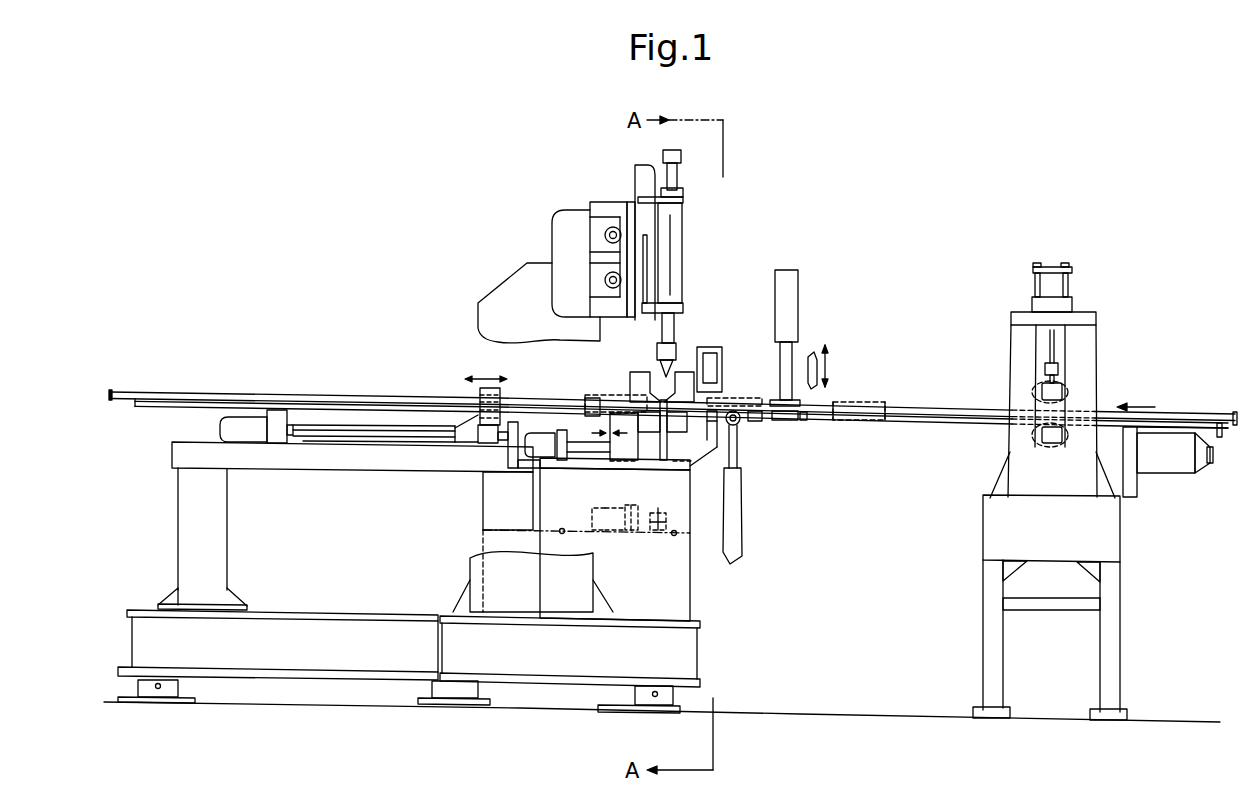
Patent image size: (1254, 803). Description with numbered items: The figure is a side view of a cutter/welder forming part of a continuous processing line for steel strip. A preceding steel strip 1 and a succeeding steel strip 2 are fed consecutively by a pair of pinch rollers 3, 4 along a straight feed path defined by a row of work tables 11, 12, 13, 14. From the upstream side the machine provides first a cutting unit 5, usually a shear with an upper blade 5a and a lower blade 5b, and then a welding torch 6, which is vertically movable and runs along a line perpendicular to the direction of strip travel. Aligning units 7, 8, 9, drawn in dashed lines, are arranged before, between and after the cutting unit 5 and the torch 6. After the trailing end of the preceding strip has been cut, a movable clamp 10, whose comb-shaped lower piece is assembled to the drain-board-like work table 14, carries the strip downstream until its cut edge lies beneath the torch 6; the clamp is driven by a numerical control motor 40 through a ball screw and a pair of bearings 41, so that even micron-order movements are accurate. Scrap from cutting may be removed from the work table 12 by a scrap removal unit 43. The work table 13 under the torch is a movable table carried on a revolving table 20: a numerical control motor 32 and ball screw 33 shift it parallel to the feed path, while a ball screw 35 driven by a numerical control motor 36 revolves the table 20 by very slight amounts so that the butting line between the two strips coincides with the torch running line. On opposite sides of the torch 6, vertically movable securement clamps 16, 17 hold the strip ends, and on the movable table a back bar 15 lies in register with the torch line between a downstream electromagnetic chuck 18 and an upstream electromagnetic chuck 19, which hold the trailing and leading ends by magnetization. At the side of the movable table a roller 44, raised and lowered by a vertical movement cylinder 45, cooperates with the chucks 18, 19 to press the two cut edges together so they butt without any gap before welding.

The preceding steel strip 1 is at (203, 394).
The succeeding steel strip 2 is at (1170, 415).
The pinch roller 3 is at (1072, 393).
The pinch roller 4 is at (1032, 414).
The cutting unit 5 is at (834, 376).
The upper blade 5a is at (810, 356).
The lower blade 5b is at (806, 421).
The welding torch 6 is at (677, 338).
The aligning unit 7 is at (860, 403).
The aligning unit 8 is at (742, 401).
The aligning unit 9 is at (607, 397).
The movable clamp 10 is at (478, 392).
The work table 11 is at (1217, 452).
The work table 12 is at (778, 421).
The movable work table 13 is at (605, 434).
The work table 14 is at (327, 408).
The back bar 15 is at (658, 428).
The securement clamp 16 is at (697, 393).
The securement clamp 17 is at (632, 388).
The downstream side electromagnetic chuck 18 is at (673, 427).
The upstream side electromagnetic chuck 19 is at (645, 425).
The revolving table 20 is at (681, 515).
The numerical control motor 32 is at (537, 437).
The ball screw 33 is at (578, 424).
The ball screw 35 is at (647, 517).
The numerical control motor 36 is at (603, 513).
The numerical control motor 40 is at (225, 429).
The bearing 41 is at (313, 429).
The scrap removal unit 43 is at (800, 304).
The roller 44 is at (738, 425).
The vertical movement cylinder 45 is at (734, 532).